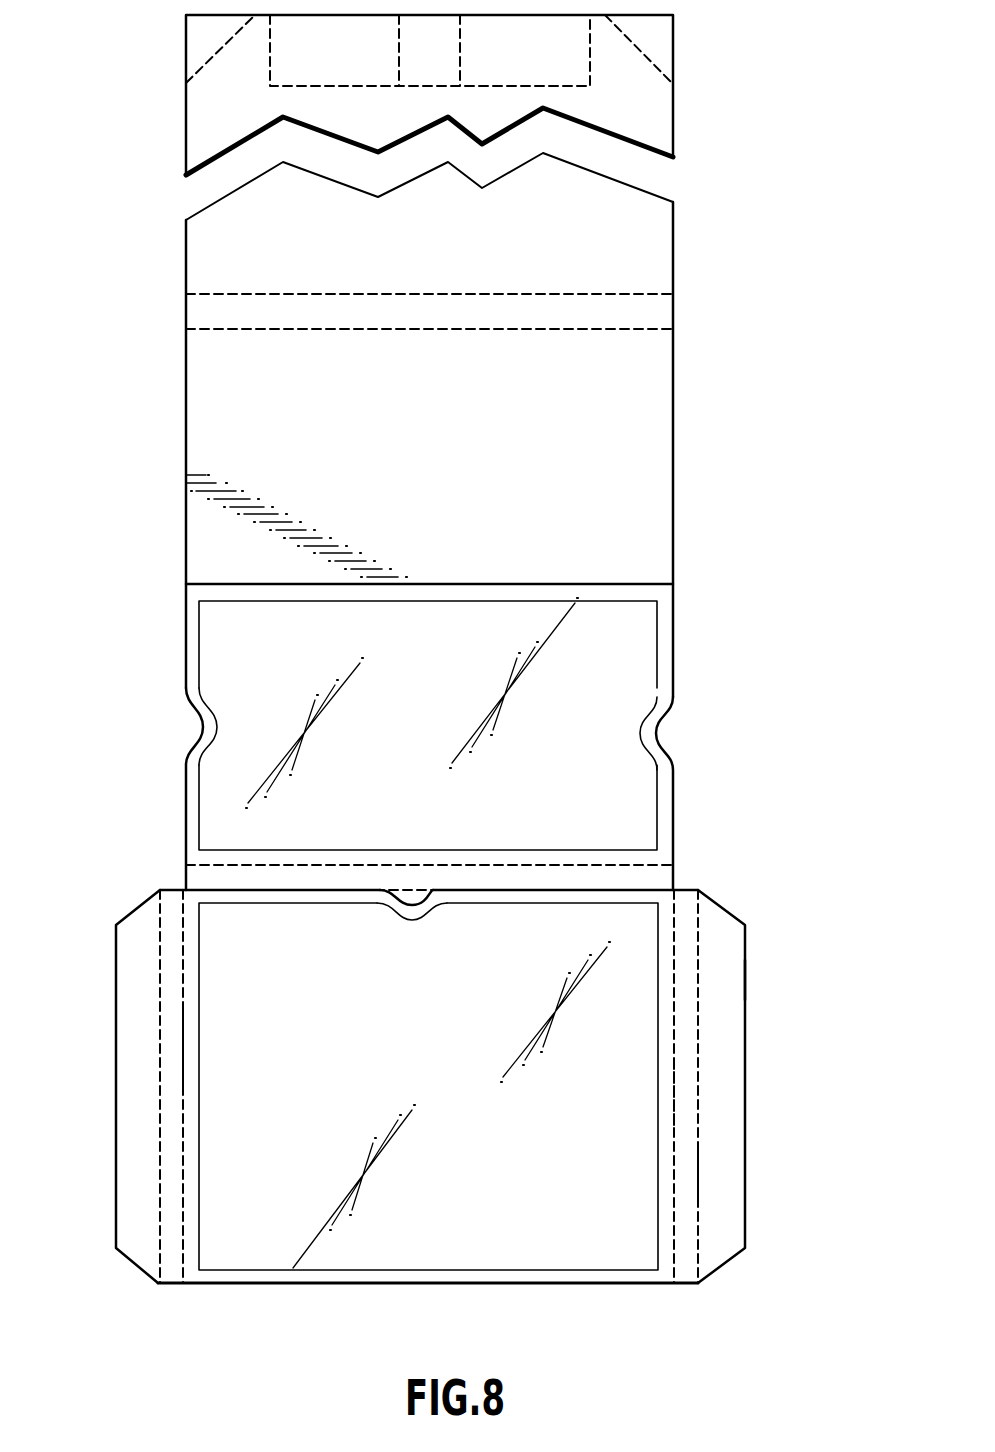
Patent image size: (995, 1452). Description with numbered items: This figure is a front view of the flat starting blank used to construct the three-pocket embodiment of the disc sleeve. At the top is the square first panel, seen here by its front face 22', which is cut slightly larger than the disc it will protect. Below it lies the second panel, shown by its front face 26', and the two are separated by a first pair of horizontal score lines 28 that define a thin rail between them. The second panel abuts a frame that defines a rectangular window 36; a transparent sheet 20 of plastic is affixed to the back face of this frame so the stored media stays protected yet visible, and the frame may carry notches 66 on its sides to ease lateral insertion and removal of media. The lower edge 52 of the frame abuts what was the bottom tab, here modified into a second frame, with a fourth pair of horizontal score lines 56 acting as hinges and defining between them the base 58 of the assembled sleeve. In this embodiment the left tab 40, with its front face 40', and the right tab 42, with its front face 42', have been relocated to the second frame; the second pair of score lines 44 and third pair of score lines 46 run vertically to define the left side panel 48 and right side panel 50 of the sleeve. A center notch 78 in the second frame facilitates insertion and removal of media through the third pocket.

The transparent sheet 20 is at (285, 660).
The front face of first panel 22' is at (429, 425).
The front face of second panel 26' is at (429, 503).
The first pair of score lines 28 is at (527, 329).
The window 36 is at (425, 705).
The left tab 40 is at (104, 1086).
The front face of left tab 40' is at (369, 1189).
The right tab 42 is at (784, 1086).
The front face of right tab 42' is at (771, 980).
The second pair of score lines 44 is at (159, 1083).
The third pair of score lines 46 is at (673, 1093).
The left side panel 48 is at (172, 925).
The right side panel 50 is at (687, 905).
The lower edge of frame 52 is at (350, 857).
The fourth pair of score lines 56 is at (428, 887).
The base 58 is at (413, 877).
The notches 66 is at (193, 730).
The center notch 78 is at (428, 908).